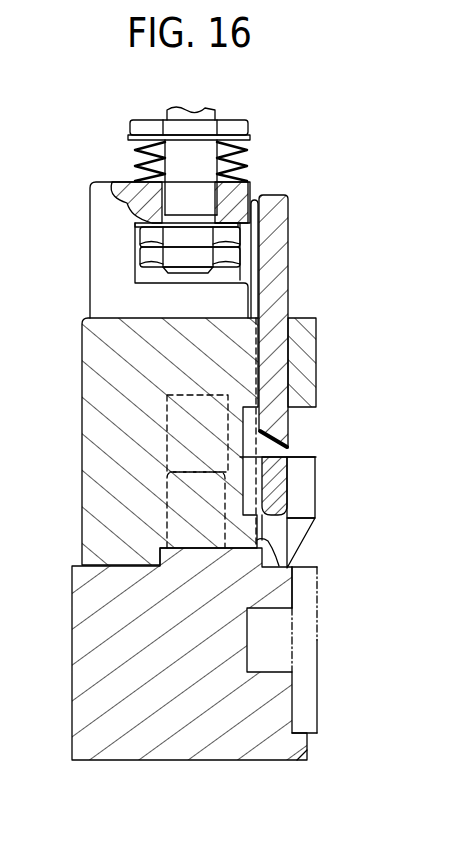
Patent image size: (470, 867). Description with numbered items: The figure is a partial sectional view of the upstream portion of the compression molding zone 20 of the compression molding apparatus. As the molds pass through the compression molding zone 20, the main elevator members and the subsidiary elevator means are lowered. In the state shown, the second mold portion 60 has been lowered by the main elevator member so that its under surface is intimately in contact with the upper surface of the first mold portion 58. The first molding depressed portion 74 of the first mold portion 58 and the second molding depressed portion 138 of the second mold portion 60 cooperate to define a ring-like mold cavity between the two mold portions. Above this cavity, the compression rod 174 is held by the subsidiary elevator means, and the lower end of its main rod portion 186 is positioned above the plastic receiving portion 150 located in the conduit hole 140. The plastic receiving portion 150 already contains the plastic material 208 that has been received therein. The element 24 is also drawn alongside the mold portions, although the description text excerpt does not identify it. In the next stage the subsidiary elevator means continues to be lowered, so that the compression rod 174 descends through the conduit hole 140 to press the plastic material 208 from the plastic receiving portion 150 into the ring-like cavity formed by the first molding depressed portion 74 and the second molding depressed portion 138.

The compression molding zone 20 is at (374, 466).
The support strip 24 is at (320, 673).
The first mold portion 58 is at (241, 772).
The second mold portion 60 is at (327, 347).
The first molding depressed portion 74 is at (200, 548).
The second molding depressed portion 138 is at (270, 588).
The conduit hole 140 is at (284, 538).
The plastic receiving portion 150 is at (286, 492).
The compression rod 174 is at (298, 217).
The main rod portion 186 is at (285, 283).
The plastic material 208 is at (287, 452).